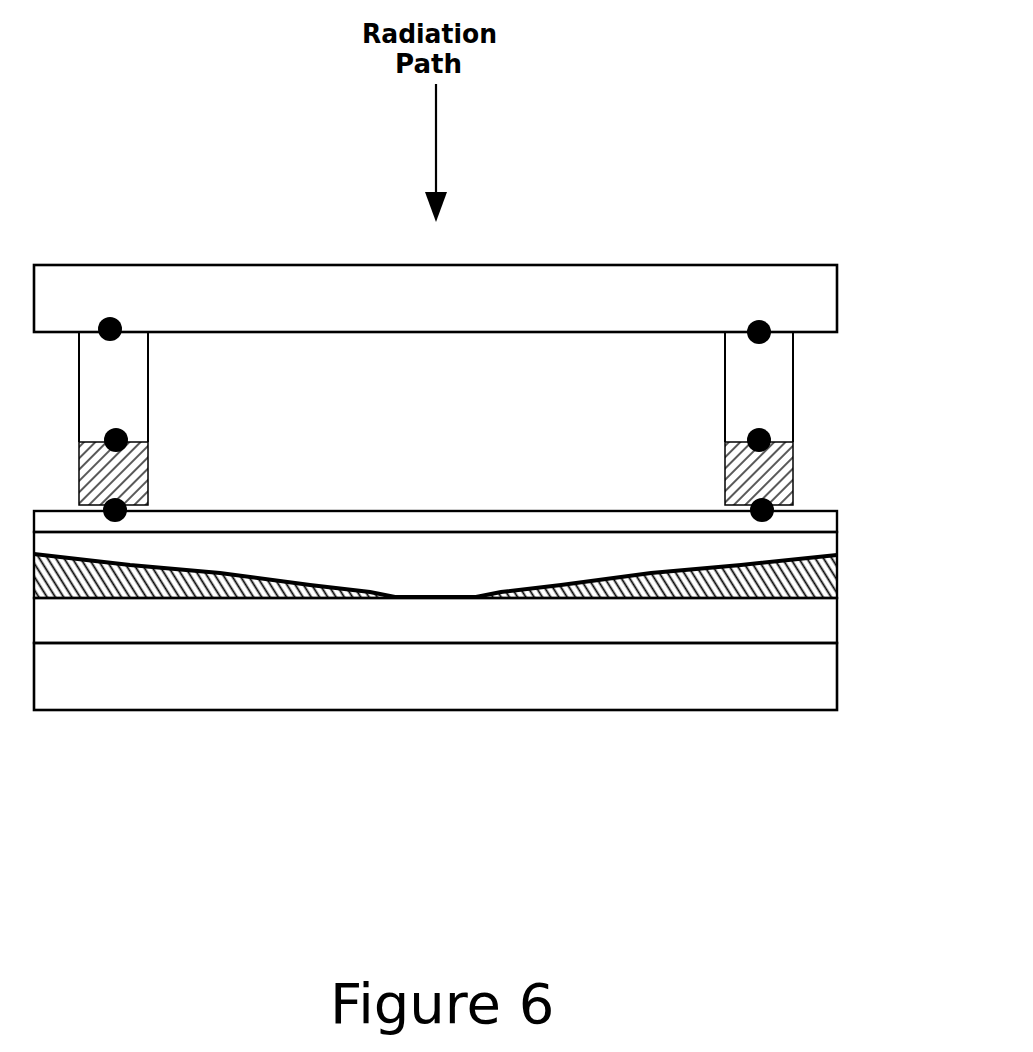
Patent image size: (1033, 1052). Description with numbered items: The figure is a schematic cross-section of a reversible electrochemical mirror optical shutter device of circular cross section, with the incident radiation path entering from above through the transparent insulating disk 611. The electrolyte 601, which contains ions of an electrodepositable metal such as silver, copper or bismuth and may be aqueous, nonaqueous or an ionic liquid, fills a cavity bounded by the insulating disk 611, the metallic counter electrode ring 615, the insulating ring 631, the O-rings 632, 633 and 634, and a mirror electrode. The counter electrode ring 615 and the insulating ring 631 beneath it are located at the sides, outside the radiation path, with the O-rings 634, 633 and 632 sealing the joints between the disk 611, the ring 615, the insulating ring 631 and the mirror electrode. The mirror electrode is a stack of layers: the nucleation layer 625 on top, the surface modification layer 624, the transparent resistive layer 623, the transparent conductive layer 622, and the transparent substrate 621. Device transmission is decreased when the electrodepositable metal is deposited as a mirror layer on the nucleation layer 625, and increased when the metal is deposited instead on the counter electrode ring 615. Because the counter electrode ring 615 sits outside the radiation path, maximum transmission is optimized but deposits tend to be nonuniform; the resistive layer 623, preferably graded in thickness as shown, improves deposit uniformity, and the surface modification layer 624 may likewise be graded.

The transparent insulating disk 611 is at (460, 312).
The electrolyte 601 is at (460, 427).
The metallic counter electrode ring 615 is at (138, 403).
The insulating ring 631 is at (742, 466).
The O-ring 632 is at (750, 506).
The O-ring 633 is at (118, 440).
The O-ring 634 is at (112, 330).
The nucleation layer 625 is at (831, 522).
The surface modification layer 624 is at (460, 577).
The transparent resistive layer 623 is at (831, 574).
The transparent conductive layer 622 is at (460, 637).
The transparent substrate 621 is at (460, 688).